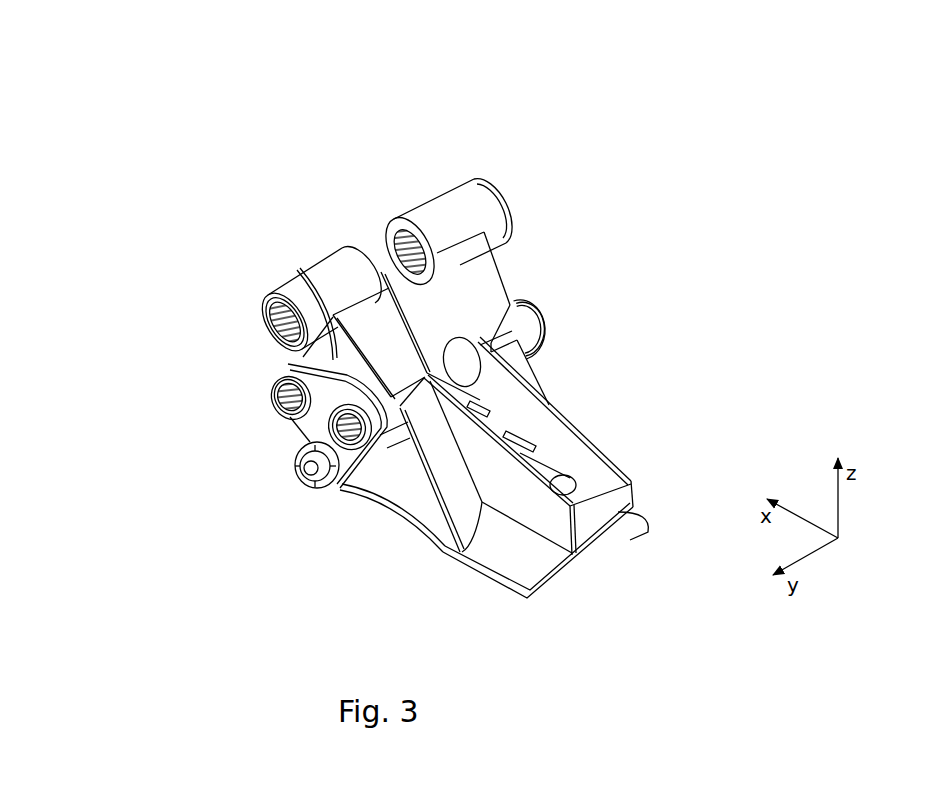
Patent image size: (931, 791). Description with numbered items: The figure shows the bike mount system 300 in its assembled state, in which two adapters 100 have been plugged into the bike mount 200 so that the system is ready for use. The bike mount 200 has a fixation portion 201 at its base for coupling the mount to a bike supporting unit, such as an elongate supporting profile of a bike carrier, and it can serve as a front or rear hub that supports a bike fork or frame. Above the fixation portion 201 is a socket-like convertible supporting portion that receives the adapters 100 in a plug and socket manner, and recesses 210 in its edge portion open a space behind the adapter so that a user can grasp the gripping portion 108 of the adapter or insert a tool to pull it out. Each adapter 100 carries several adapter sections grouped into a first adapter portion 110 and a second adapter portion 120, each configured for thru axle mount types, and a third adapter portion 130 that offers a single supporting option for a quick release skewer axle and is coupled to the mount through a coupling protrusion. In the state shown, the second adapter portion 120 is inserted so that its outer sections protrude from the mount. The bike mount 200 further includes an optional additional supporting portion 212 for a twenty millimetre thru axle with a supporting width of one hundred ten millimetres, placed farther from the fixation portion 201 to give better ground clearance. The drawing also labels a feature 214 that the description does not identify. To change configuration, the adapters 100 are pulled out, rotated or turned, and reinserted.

The bike mount system 300 is at (552, 160).
The bike mount 200 is at (291, 192).
The additional supporting portion 212 is at (433, 194).
The bore of sleeve 214 is at (408, 255).
The recesses 210 is at (331, 358).
The fixation portion 201 is at (586, 576).
The adapter 100 is at (534, 288).
The first adapter portion 110 is at (262, 377).
The gripping portion 108 is at (287, 415).
The second adapter portion 120 is at (556, 341).
The third adapter portion 130 is at (337, 508).